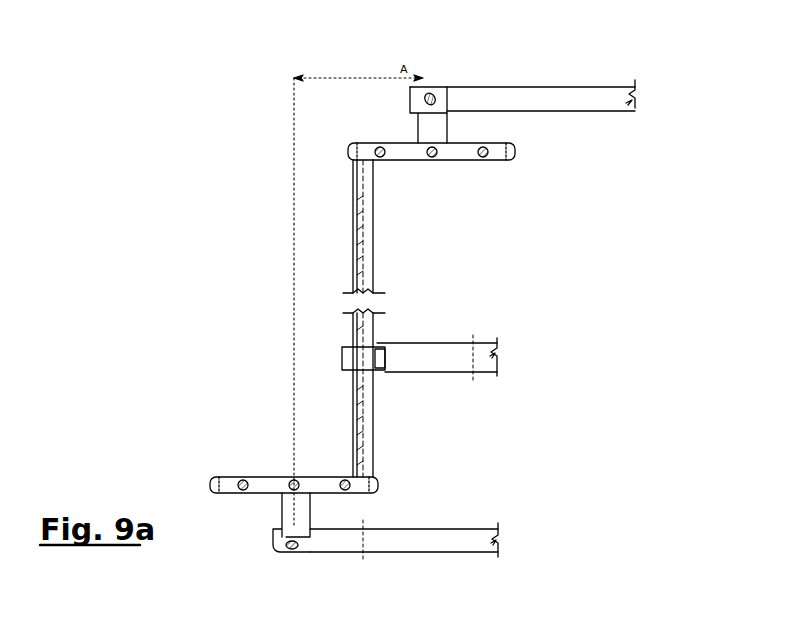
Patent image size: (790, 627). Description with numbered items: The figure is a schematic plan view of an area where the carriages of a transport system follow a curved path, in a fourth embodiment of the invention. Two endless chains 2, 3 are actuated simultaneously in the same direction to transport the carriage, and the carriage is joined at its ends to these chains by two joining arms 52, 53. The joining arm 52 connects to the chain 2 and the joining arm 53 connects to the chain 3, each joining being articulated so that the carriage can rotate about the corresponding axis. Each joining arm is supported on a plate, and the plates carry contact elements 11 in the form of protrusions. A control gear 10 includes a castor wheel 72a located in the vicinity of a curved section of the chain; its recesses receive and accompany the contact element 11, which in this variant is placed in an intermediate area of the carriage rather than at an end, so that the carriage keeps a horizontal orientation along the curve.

The endless chain 2 is at (432, 552).
The endless chain 3 is at (528, 87).
The control gear 10 is at (428, 328).
The contact element 11 is at (342, 362).
The joining arm 52 is at (282, 513).
The joining arm 53 is at (447, 125).
The castor wheel 72a is at (437, 372).